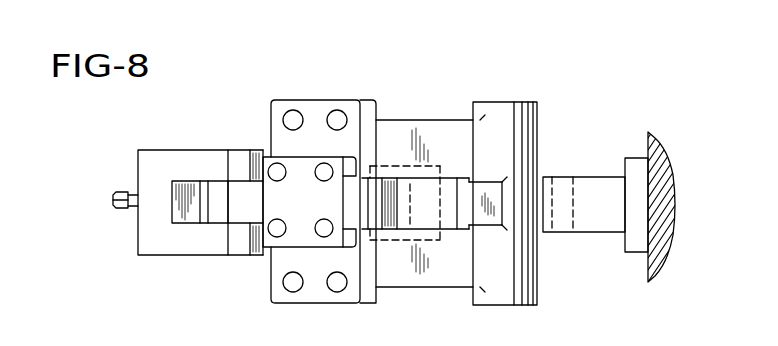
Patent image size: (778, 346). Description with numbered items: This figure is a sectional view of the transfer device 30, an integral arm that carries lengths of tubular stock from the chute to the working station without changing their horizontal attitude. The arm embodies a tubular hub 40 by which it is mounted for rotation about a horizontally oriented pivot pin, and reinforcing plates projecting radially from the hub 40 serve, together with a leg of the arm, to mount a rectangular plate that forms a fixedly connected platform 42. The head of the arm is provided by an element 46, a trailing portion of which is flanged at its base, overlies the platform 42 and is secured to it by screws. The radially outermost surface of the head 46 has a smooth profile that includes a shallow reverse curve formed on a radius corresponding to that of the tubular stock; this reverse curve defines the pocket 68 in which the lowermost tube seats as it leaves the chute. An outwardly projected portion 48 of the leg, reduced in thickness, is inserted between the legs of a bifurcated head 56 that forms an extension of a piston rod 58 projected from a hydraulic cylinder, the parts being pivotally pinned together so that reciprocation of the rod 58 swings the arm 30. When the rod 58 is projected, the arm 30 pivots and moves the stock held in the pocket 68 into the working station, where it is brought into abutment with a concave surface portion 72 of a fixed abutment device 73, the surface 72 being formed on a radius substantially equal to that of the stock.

The transfer device 30 is at (441, 292).
The tubular hub 40 is at (500, 106).
The platform 42 is at (316, 105).
The element 46 is at (268, 210).
The outwardly projected portion 48 is at (220, 190).
The bifurcated head 56 is at (183, 241).
The piston rod 58 is at (123, 188).
The pocket 68 is at (402, 185).
The concave surface portion 72 is at (576, 198).
The fixed abutment device 73 is at (596, 240).